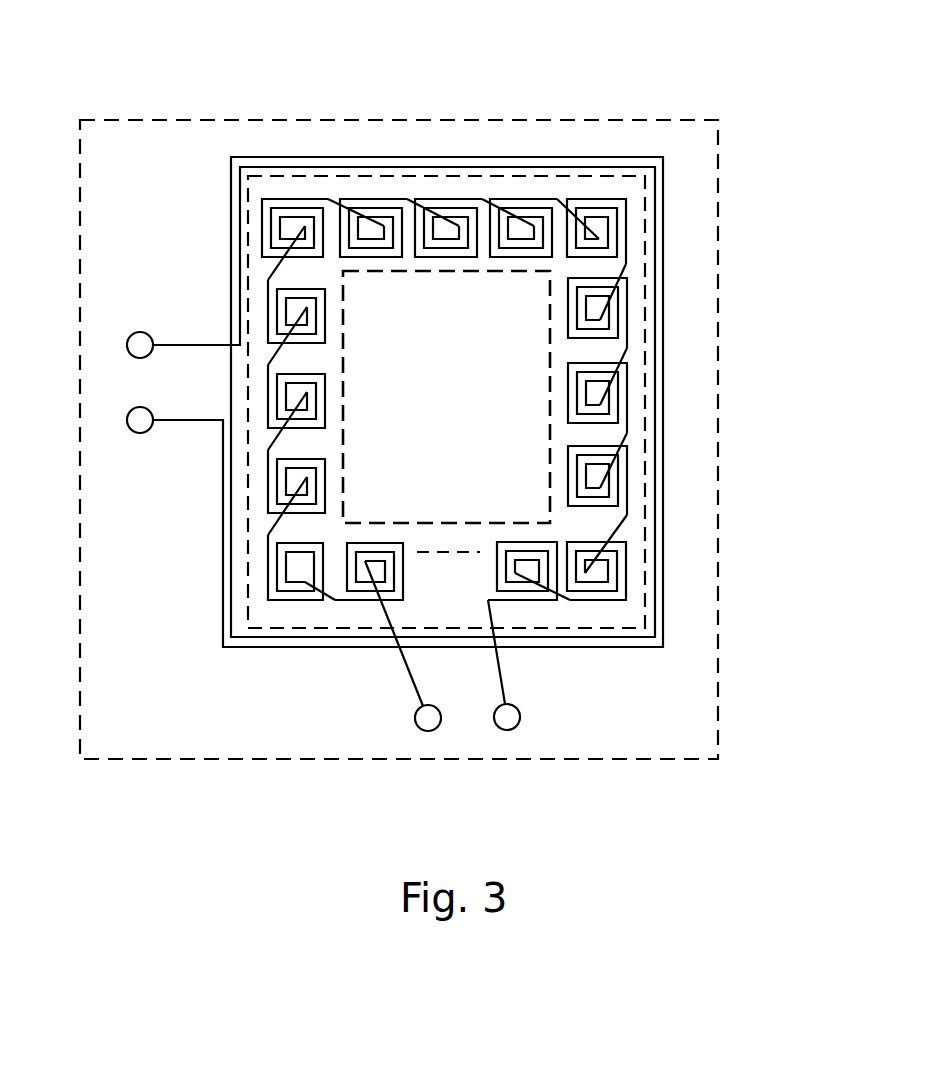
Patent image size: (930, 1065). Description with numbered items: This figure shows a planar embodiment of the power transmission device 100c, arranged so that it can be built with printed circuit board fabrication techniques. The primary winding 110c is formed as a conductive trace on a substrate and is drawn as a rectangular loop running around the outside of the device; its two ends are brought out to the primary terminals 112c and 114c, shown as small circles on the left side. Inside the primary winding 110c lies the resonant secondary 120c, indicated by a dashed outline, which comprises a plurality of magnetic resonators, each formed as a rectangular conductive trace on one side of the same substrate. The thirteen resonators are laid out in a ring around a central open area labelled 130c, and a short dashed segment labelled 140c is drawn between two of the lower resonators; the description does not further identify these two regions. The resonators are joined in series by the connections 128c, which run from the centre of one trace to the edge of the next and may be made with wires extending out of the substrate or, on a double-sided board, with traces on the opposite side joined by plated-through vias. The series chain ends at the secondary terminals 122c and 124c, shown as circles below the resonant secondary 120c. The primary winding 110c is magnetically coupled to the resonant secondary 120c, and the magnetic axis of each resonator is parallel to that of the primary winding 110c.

The power transmission device 100c is at (212, 120).
The primary winding 110c is at (222, 250).
The primary terminal 112c is at (141, 333).
The primary terminal 114c is at (142, 434).
The resonant secondary 120c is at (246, 580).
The secondary terminal 122c is at (414, 718).
The secondary terminal 124c is at (521, 712).
The connections 128c is at (624, 523).
The central region 130c is at (446, 397).
The gap 140c is at (465, 555).